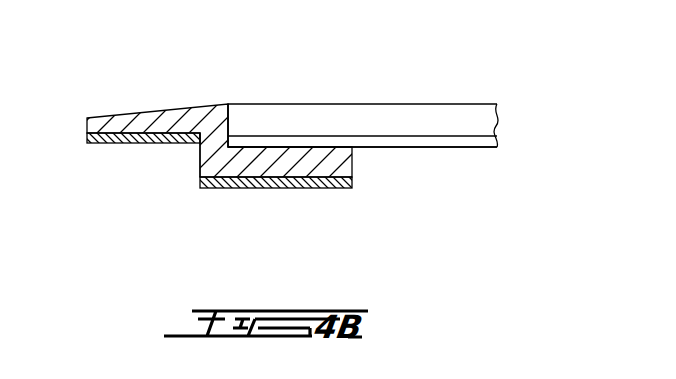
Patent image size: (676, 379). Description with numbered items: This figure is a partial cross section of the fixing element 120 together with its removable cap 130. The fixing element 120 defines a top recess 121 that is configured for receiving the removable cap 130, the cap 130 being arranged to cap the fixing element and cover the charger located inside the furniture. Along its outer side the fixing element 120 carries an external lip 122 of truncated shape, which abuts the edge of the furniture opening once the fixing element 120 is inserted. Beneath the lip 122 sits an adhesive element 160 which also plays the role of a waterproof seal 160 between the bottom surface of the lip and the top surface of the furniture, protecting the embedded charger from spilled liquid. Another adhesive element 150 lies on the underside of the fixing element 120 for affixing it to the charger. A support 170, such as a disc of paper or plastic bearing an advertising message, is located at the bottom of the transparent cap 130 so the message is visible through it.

The fixing element 120 is at (138, 104).
The top recess 121 is at (296, 147).
The external lip 122 is at (112, 143).
The removable cap 130 is at (431, 104).
The adhesive element 150 is at (277, 189).
The adhesive element / waterproof seal 160 is at (148, 143).
The support 170 is at (475, 142).